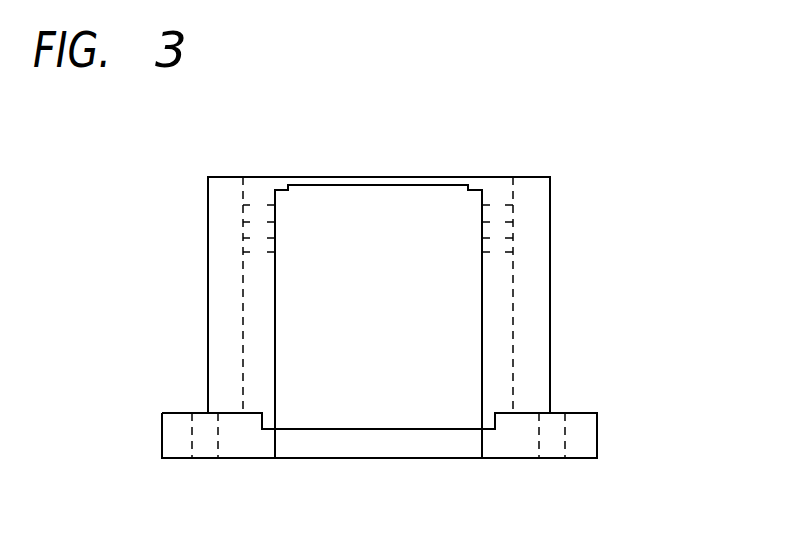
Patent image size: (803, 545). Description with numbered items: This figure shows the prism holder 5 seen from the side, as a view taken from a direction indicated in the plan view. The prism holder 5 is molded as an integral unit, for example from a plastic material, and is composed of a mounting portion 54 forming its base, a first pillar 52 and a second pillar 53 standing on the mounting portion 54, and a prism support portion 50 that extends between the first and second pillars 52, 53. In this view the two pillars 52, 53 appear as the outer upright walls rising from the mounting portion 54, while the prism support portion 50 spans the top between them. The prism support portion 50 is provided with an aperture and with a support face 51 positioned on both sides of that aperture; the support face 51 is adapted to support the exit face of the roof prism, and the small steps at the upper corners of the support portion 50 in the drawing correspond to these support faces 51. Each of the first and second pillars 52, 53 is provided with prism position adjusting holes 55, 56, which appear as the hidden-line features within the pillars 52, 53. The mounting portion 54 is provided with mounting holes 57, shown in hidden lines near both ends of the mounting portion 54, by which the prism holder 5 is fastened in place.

The prism holder 5 is at (575, 278).
The prism support portion 50 is at (381, 182).
The support face 51 is at (283, 182).
The first pillar 52 is at (538, 330).
The second pillar 53 is at (218, 322).
The mounting portion 54 is at (383, 440).
The prism position adjusting hole 55 is at (543, 245).
The prism position adjusting hole 56 is at (511, 221).
The mounting holes 57 is at (206, 447).